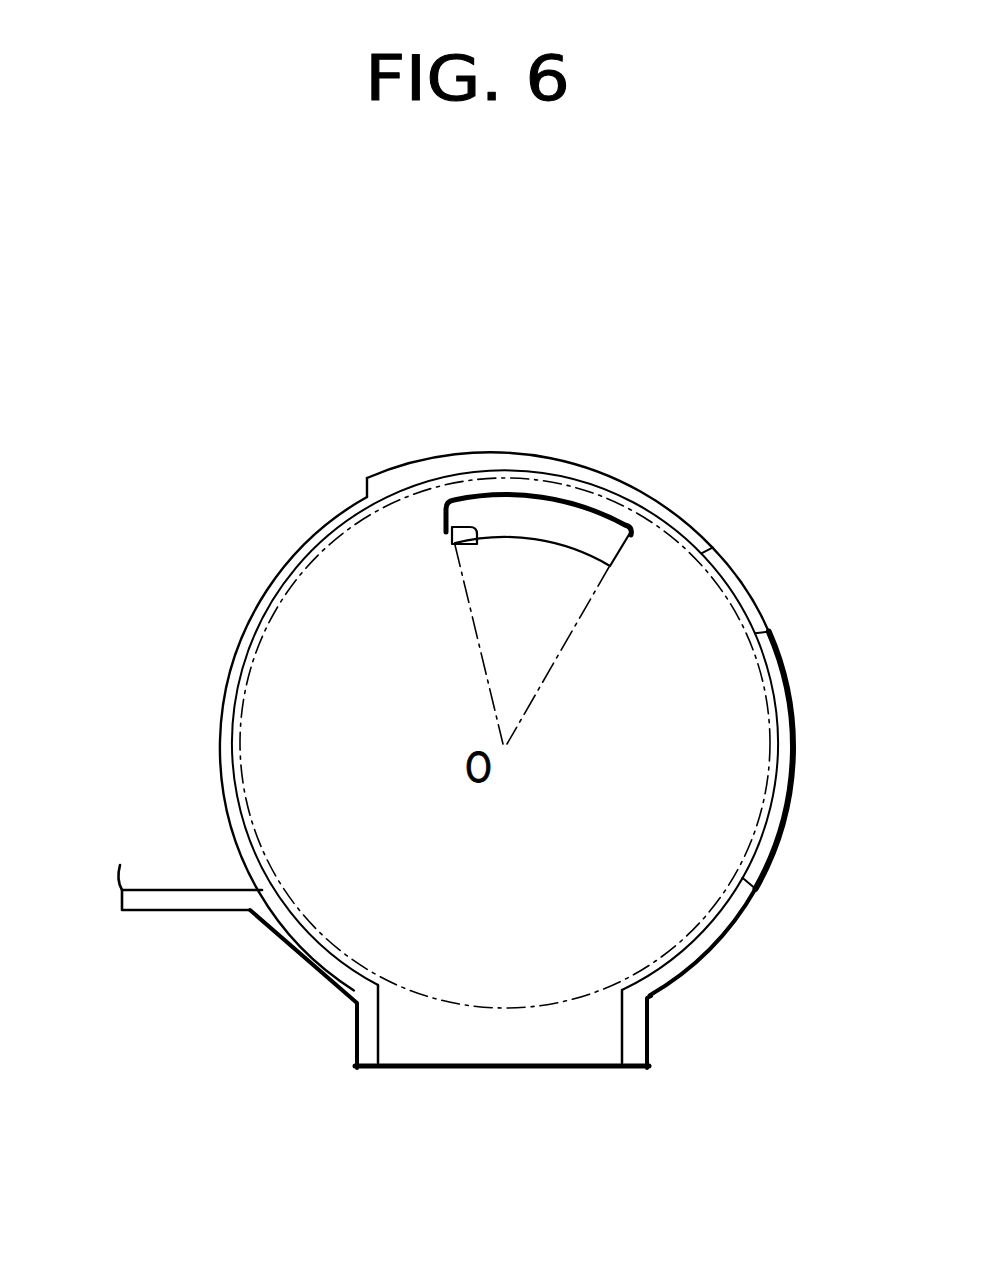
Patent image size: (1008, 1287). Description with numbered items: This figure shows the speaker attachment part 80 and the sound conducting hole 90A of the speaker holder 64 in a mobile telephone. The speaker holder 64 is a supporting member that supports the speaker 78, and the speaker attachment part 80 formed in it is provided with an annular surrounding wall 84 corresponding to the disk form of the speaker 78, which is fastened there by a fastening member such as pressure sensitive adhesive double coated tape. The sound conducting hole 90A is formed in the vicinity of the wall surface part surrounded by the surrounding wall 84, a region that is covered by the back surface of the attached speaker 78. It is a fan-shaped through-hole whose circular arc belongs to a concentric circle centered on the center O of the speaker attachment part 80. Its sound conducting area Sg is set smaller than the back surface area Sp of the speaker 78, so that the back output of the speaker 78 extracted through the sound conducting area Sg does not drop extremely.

The speaker holder 64 is at (870, 640).
The speaker 78 is at (760, 892).
The speaker attachment part 80 is at (224, 803).
The surrounding wall 84 is at (700, 966).
The sound conducting hole 90A is at (452, 536).